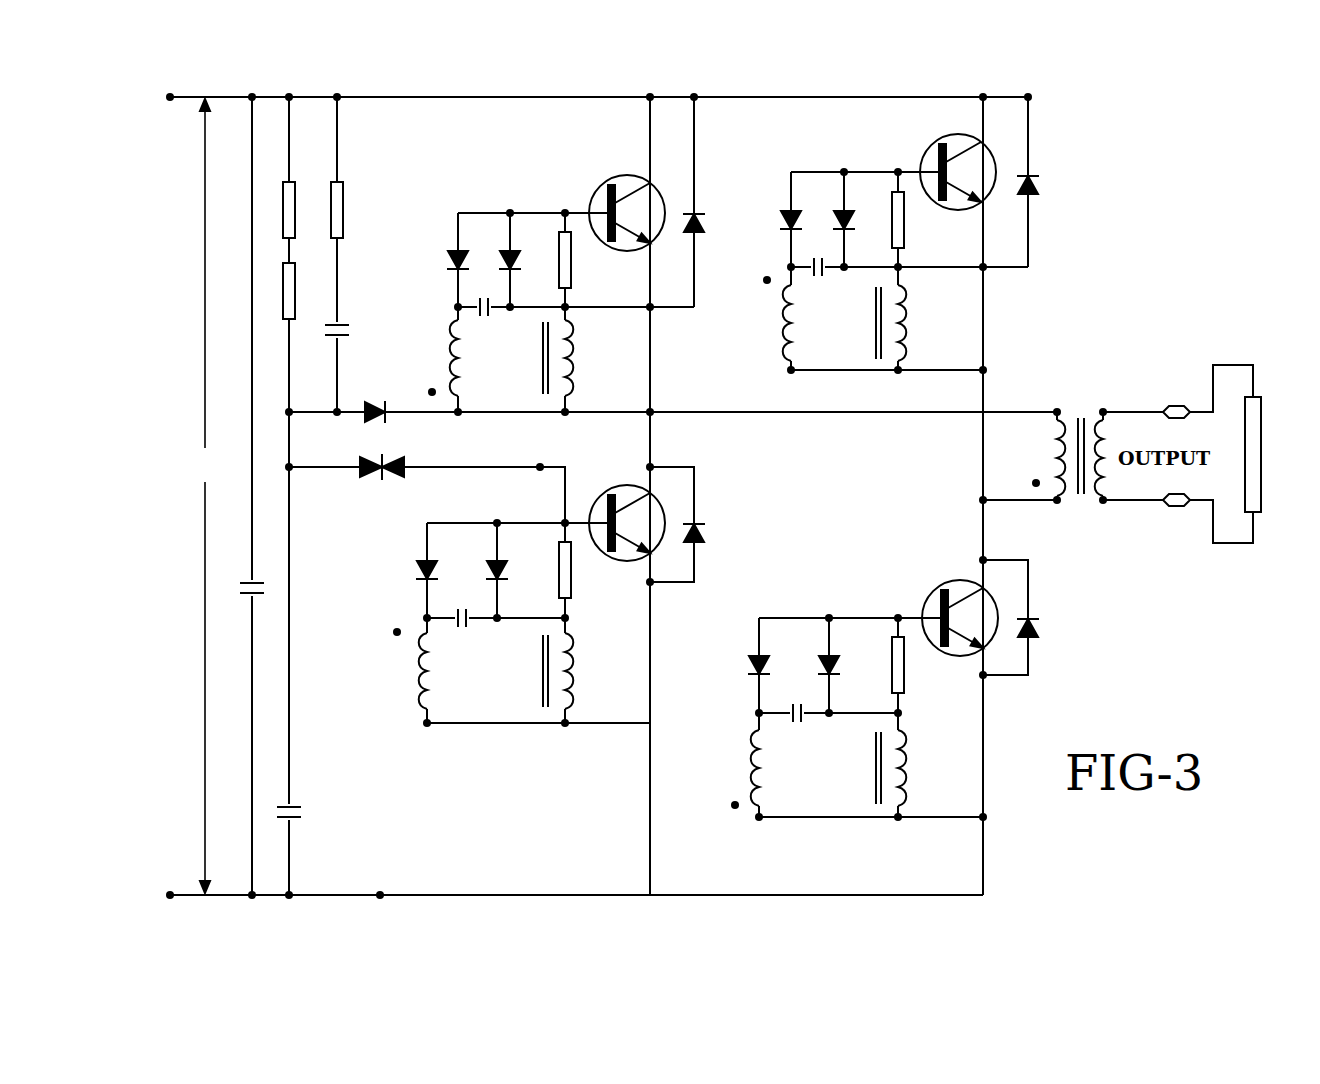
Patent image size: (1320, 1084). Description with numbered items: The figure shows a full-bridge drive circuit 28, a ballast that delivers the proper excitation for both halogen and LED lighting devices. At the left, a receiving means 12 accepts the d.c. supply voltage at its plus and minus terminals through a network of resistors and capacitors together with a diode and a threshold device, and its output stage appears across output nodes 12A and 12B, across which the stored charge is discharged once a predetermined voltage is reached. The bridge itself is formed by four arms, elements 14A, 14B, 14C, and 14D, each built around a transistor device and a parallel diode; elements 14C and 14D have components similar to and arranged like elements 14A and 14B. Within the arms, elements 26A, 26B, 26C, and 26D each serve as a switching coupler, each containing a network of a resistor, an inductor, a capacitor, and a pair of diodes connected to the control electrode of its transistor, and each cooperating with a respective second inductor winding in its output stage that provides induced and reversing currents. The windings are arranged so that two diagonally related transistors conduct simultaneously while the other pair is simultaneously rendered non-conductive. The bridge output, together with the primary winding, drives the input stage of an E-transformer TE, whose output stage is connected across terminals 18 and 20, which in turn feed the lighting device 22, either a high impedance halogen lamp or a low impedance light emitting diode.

The receiving means 12 is at (376, 210).
The output node 12A is at (542, 465).
The output node 12B is at (382, 893).
The element 14A is at (611, 256).
The element 14B is at (555, 575).
The element 14C is at (937, 230).
The element 14D is at (921, 688).
The terminal 18 is at (1178, 406).
The terminal 20 is at (1175, 506).
The lighting device 22 is at (1262, 418).
The element 26A is at (568, 205).
The element 26B is at (518, 505).
The element 26C is at (906, 160).
The element 26D is at (866, 597).
The full-bridge drive circuit 28 is at (1055, 327).
The E-transformer TE is at (1092, 380).